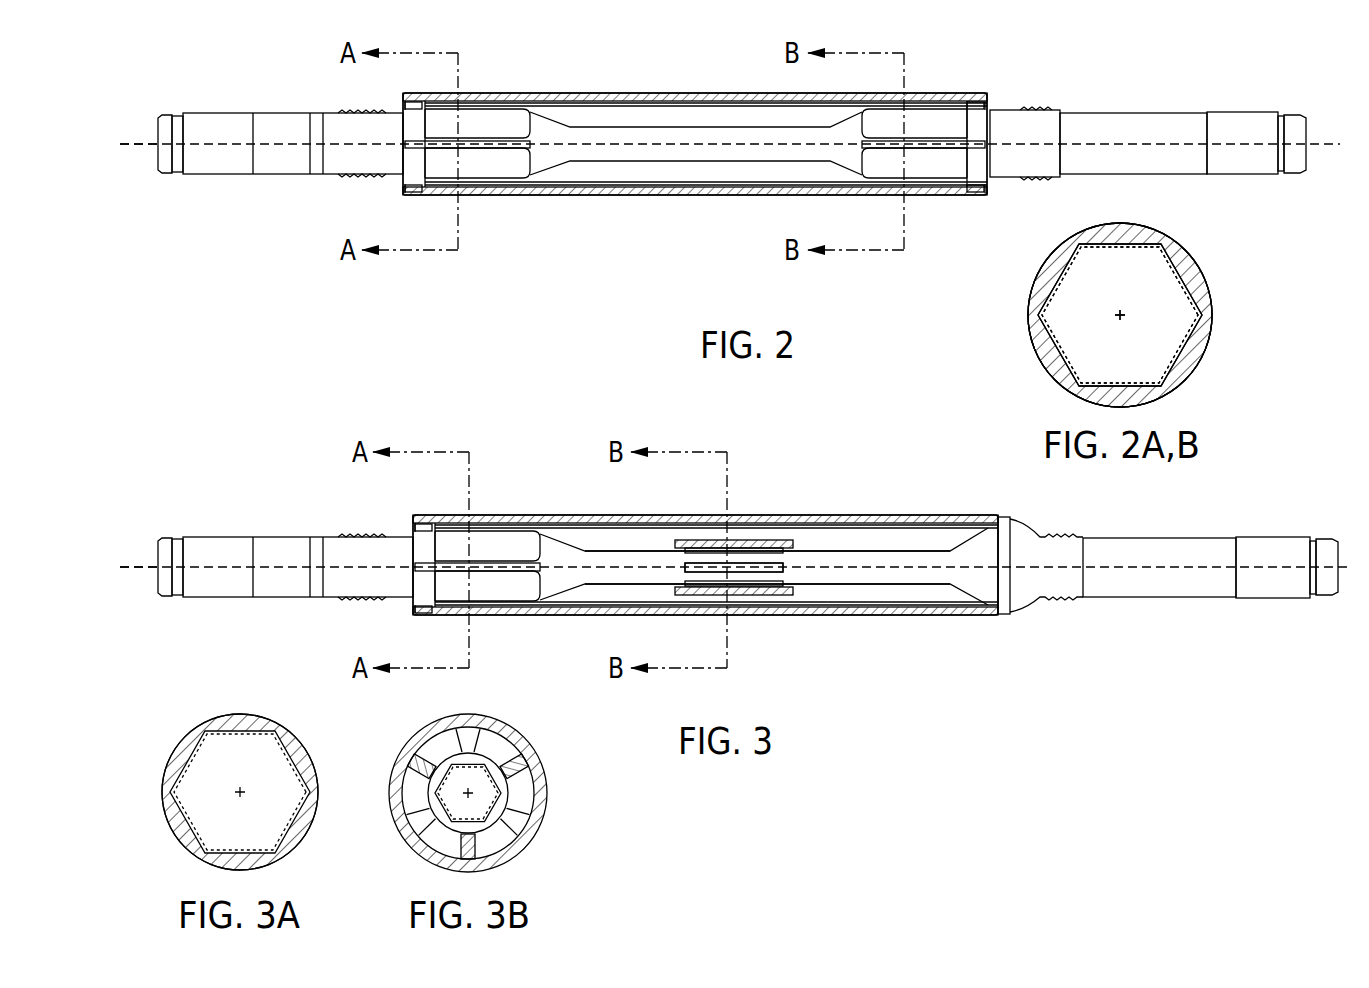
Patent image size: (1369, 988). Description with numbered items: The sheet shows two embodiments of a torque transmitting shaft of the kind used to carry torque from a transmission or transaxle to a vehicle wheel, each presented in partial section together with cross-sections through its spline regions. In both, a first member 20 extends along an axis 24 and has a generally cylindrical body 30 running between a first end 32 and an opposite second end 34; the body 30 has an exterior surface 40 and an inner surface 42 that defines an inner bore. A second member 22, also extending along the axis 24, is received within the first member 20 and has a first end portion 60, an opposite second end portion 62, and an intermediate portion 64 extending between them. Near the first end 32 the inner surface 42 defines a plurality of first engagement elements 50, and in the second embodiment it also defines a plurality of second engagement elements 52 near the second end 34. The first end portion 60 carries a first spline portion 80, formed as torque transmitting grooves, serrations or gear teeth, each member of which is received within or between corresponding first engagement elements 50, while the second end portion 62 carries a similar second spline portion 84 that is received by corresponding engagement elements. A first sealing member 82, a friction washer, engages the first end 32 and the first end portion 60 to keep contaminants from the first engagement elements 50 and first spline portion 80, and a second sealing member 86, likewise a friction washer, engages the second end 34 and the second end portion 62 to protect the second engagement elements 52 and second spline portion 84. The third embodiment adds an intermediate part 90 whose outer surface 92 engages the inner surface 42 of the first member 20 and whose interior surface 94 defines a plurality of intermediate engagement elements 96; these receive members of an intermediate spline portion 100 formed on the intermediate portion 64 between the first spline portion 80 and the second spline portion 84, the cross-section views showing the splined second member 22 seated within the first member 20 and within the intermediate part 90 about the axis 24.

In FIG. 2, the first member 20 is at (749, 78).
In FIG. 2A, the first member 20 is at (1140, 226).
In FIG. 2B, the first member 20 is at (1120, 315).
In FIG. 3, the first member 20 is at (846, 498).
In FIG. 3A, the first member 20 is at (255, 718).
In FIG. 3B, the first member 20 is at (470, 714).
In FIG. 2, the second member 22 is at (215, 84).
In FIG. 2A, the second member 22 is at (1040, 287).
In FIG. 2B, the second member 22 is at (1120, 315).
In FIG. 3, the second member 22 is at (257, 523).
In FIG. 3A, the second member 22 is at (190, 750).
In FIG. 3B, the second member 22 is at (510, 760).
In FIG. 2, the axis 24 is at (128, 152).
In FIG. 2A, the axis 24 is at (1126, 312).
In FIG. 2B, the axis 24 is at (1120, 315).
In FIG. 3, the axis 24 is at (128, 576).
In FIG. 3A, the axis 24 is at (244, 790).
In FIG. 3B, the axis 24 is at (466, 791).
In FIG. 2, the body 30 is at (697, 93).
In FIG. 3, the body 30 is at (775, 515).
In FIG. 2, the first end 32 is at (403, 97).
In FIG. 3, the first end 32 is at (413, 520).
In FIG. 2, the second end 34 is at (987, 97).
In FIG. 3, the second end 34 is at (990, 520).
In FIG. 2, the exterior surface 40 is at (600, 93).
In FIG. 3, the exterior surface 40 is at (557, 515).
In FIG. 2, the inner surface 42 is at (637, 95).
In FIG. 3, the inner surface 42 is at (592, 517).
In FIG. 2, the first engagement elements 50 is at (433, 93).
In FIG. 2A, the first engagement elements 50 is at (1183, 253).
In FIG. 3, the first engagement elements 50 is at (433, 516).
In FIG. 3A, the first engagement elements 50 is at (222, 716).
In FIG. 2, the second engagement elements 52 is at (970, 93).
In FIG. 2B, the second engagement elements 52 is at (1120, 315).
In FIG. 2, the first end portion 60 is at (491, 112).
In FIG. 3, the first end portion 60 is at (491, 536).
In FIG. 2, the second end portion 62 is at (926, 125).
In FIG. 3, the second end portion 62 is at (1038, 553).
In FIG. 2, the intermediate portion 64 is at (690, 164).
In FIG. 3, the intermediate portion 64 is at (642, 538).
In FIG. 2, the first spline portion 80 is at (488, 170).
In FIG. 2A, the first spline portion 80 is at (1085, 256).
In FIG. 3, the first spline portion 80 is at (488, 597).
In FIG. 3A, the first spline portion 80 is at (280, 840).
In FIG. 2, the first sealing member 82 is at (405, 186).
In FIG. 3, the first sealing member 82 is at (415, 608).
In FIG. 2, the second spline portion 84 is at (925, 170).
In FIG. 2B, the second spline portion 84 is at (1120, 315).
In FIG. 2, the second sealing member 86 is at (985, 186).
In FIG. 3, the intermediate part 90 is at (778, 594).
In FIG. 3B, the intermediate part 90 is at (505, 806).
In FIG. 3, the outer surface 92 is at (745, 596).
In FIG. 3, the interior surface 94 is at (790, 582).
In FIG. 3B, the intermediate engagement elements 96 is at (530, 795).
In FIG. 3, the intermediate spline portion 100 is at (790, 570).
In FIG. 3B, the intermediate spline portion 100 is at (498, 836).